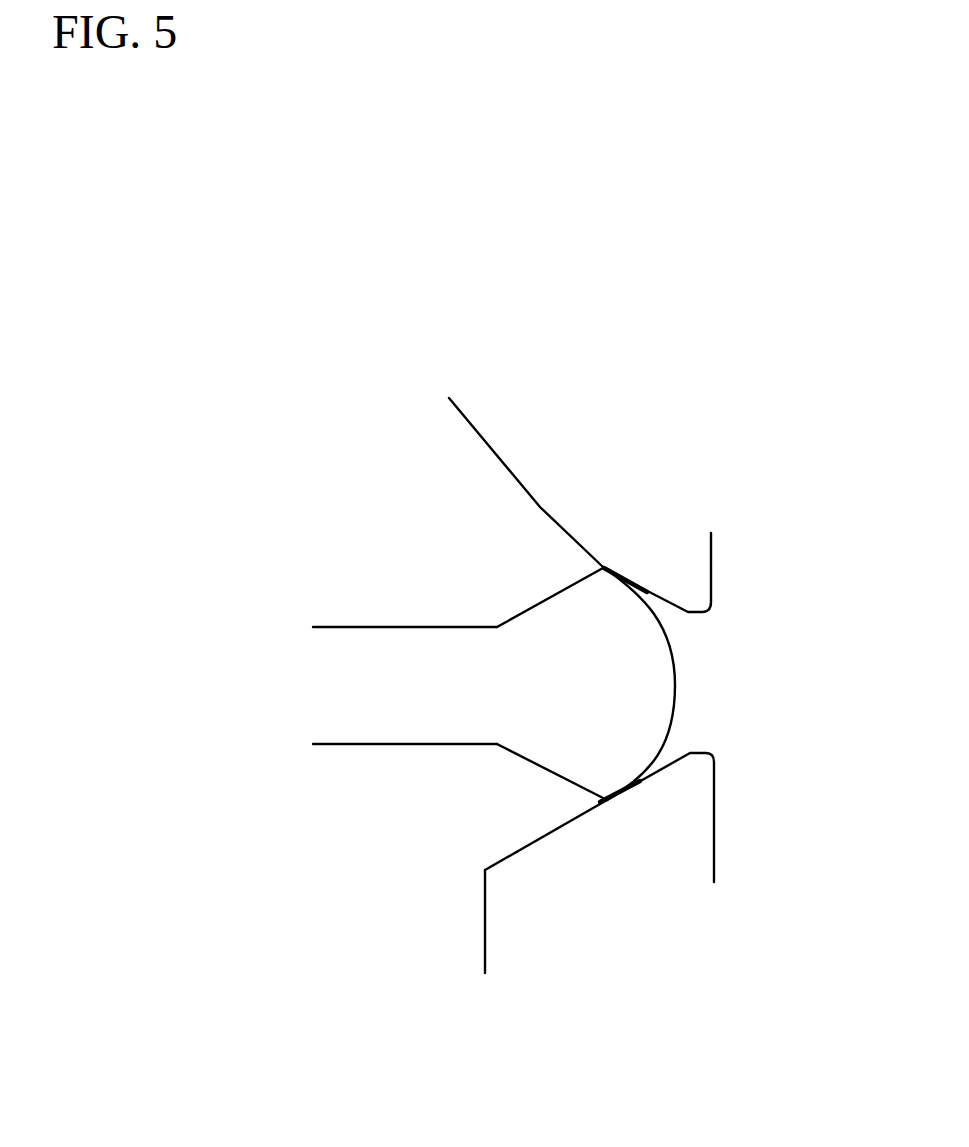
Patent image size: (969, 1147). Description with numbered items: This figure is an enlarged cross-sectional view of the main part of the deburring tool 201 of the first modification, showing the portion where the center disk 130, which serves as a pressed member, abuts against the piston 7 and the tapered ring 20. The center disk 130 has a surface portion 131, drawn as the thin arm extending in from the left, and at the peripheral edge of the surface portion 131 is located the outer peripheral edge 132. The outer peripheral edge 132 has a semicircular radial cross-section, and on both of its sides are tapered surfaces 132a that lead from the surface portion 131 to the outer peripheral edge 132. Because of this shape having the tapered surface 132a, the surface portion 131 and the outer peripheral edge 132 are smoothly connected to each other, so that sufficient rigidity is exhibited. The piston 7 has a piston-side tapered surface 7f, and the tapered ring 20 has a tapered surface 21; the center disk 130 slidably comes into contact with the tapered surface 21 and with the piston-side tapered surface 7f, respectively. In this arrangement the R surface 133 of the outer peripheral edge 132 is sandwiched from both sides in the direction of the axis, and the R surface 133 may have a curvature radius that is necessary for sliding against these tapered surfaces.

The piston 7 is at (512, 480).
The piston-side tapered surface 7f is at (632, 595).
The tapered ring 20 is at (485, 925).
The tapered surface 21 is at (630, 797).
The center disk 130 is at (713, 467).
The surface portion 131 is at (434, 655).
The outer peripheral edge 132 is at (703, 607).
The tapered surface 132a is at (533, 606).
The R surface 133 is at (628, 577).
The deburring tool 201 is at (774, 487).